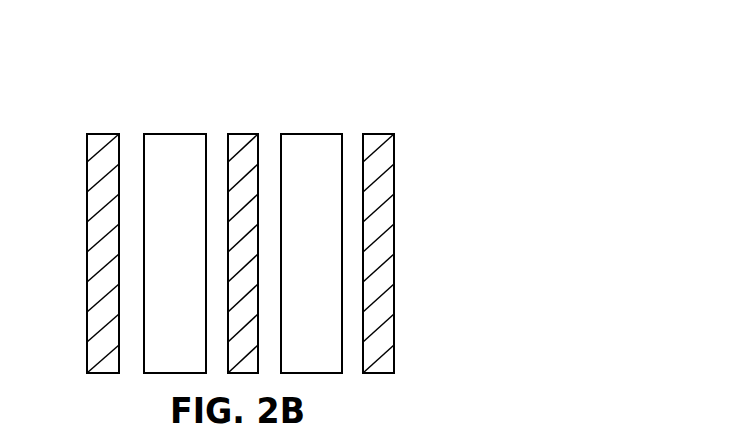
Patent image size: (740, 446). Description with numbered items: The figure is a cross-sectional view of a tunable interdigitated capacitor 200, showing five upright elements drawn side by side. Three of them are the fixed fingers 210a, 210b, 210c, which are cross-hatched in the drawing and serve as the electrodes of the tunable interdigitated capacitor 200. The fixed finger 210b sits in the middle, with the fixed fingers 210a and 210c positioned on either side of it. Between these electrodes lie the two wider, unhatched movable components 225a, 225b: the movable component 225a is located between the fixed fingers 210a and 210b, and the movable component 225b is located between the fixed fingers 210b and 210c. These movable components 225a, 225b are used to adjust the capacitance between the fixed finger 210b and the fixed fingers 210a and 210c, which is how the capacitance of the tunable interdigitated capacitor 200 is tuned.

The tunable interdigitated capacitor 200 is at (263, 68).
The fixed finger 210a is at (102, 134).
The fixed finger 210b is at (244, 134).
The fixed finger 210c is at (379, 134).
The movable component 225a is at (201, 262).
The movable component 225b is at (336, 262).